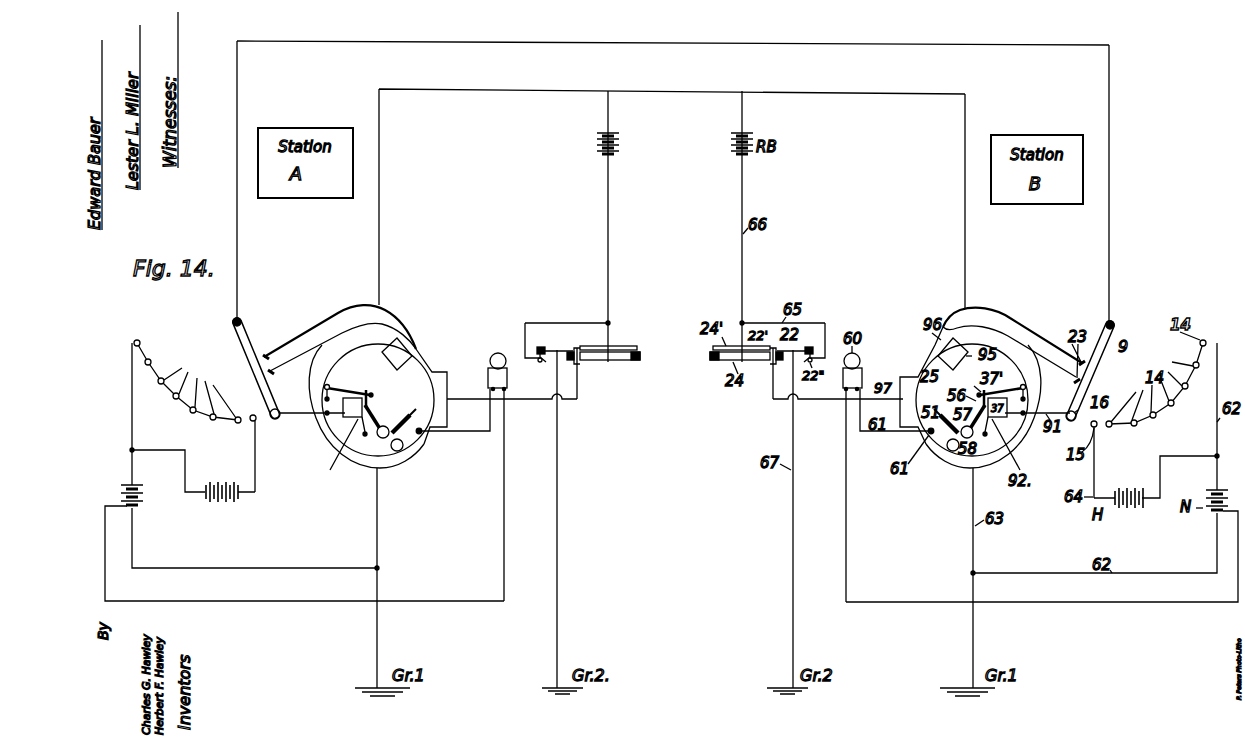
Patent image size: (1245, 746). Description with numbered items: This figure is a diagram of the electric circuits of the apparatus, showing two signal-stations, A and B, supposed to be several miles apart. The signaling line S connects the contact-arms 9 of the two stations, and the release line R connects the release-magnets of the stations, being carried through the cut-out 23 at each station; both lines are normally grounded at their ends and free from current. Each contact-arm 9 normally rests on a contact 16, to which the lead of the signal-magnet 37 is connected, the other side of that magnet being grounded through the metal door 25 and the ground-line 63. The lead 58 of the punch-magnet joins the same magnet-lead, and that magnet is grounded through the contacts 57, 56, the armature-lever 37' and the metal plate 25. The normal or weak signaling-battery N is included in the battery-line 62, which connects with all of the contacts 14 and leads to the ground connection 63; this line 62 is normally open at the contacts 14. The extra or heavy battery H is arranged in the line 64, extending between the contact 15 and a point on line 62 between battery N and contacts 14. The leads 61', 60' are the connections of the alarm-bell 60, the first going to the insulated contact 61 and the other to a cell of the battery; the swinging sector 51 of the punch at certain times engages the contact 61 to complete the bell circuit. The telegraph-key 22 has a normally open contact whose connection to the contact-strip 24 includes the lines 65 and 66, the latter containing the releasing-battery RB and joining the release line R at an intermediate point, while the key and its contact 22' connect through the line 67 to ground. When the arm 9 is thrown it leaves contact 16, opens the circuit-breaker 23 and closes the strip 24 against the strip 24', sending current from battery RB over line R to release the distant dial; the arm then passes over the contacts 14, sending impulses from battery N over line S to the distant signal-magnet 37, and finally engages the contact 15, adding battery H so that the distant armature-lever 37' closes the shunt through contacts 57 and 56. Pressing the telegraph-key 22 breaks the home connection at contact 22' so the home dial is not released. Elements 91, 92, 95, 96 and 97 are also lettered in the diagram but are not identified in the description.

The contact-arm 9 is at (256, 368).
The contacts 14 is at (152, 339).
The contact 15 is at (252, 424).
The contact 16 is at (278, 409).
The telegraph-key 22 is at (555, 344).
The contact 22' is at (585, 344).
The cut-out 23 is at (273, 371).
The contact-strip 24 is at (607, 373).
The strip 24' is at (611, 335).
The metal door 25 is at (348, 384).
The signal-magnet 37 is at (353, 408).
The armature-lever 37' is at (380, 389).
The swinging sector 51 is at (416, 418).
The contact 56 is at (374, 401).
The contact 57 is at (378, 418).
The lead 58 is at (381, 440).
The alarm-bell 60 is at (497, 465).
The lead 60' is at (304, 563).
The insulated contact 61 is at (436, 450).
The lead 61' is at (454, 410).
The battery-line 62 is at (132, 420).
The ground-line 63 is at (379, 516).
The line 64 is at (240, 497).
The line 65 is at (572, 323).
The line 66 is at (608, 226).
The line 67 is at (559, 466).
The conductor 91 is at (305, 414).
The selector 92 is at (342, 444).
The magnet 95 is at (385, 356).
The casing 96 is at (418, 342).
The conductor 97 is at (512, 389).
The signaling line S is at (673, 171).
The release line R is at (672, 189).
The releasing-battery RB is at (623, 144).
The normal signaling-battery N is at (138, 501).
The heavy battery H is at (237, 513).